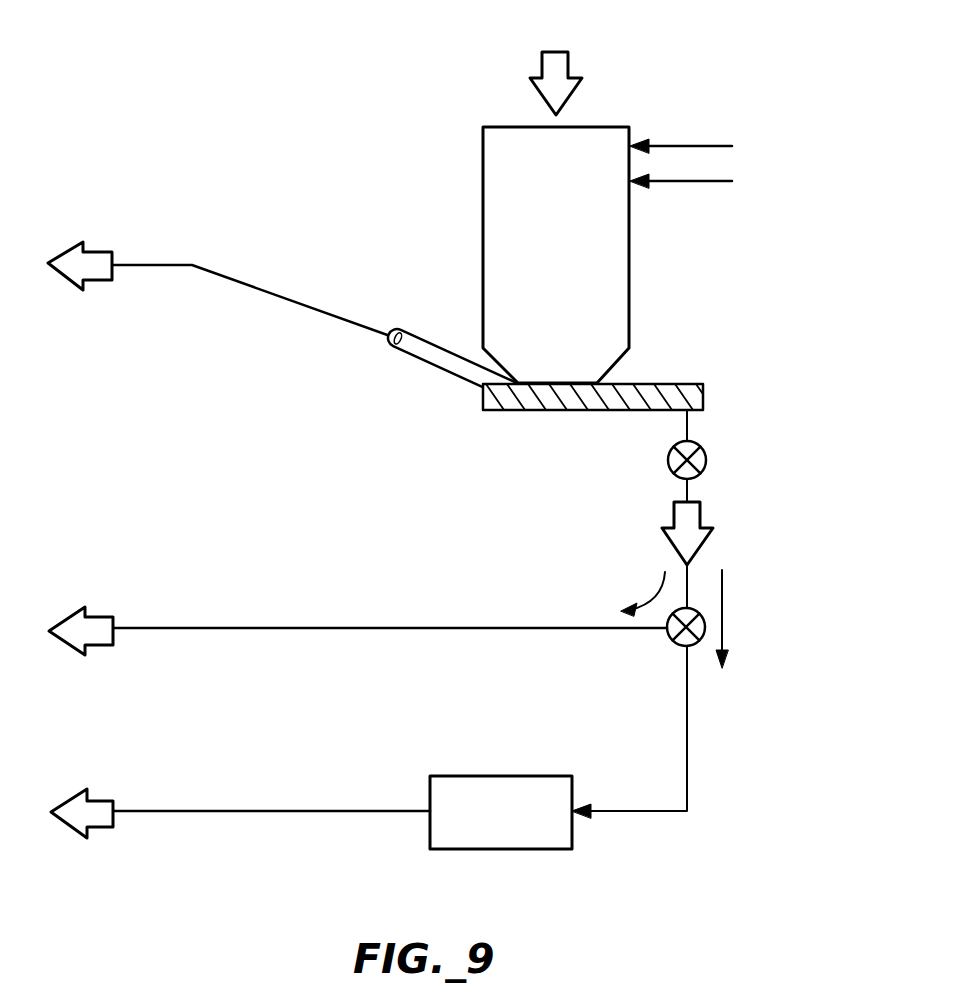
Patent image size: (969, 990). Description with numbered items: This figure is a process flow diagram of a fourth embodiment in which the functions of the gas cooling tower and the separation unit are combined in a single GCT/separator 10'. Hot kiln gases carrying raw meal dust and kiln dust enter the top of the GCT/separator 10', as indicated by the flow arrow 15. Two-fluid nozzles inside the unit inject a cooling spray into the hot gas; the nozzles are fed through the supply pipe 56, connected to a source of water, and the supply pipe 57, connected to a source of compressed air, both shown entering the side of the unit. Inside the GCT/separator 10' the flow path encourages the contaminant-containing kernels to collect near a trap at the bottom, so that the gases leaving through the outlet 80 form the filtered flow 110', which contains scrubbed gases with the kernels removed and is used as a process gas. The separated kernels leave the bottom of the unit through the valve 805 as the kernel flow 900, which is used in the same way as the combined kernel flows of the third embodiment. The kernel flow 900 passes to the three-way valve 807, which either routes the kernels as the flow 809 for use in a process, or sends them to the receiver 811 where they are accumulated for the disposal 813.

The flow arrow 15 is at (570, 70).
The GCT/separator 10' is at (556, 255).
The supply pipe 56 is at (670, 143).
The supply pipe 57 is at (673, 184).
The filtered flow 110' is at (220, 274).
The outlet 80 is at (458, 348).
The valve 805 is at (706, 465).
The kernel flow 900 is at (672, 512).
The three-way valve 807 is at (668, 636).
The flow 809 is at (90, 617).
The receiver 811 is at (515, 826).
The disposal 813 is at (90, 800).